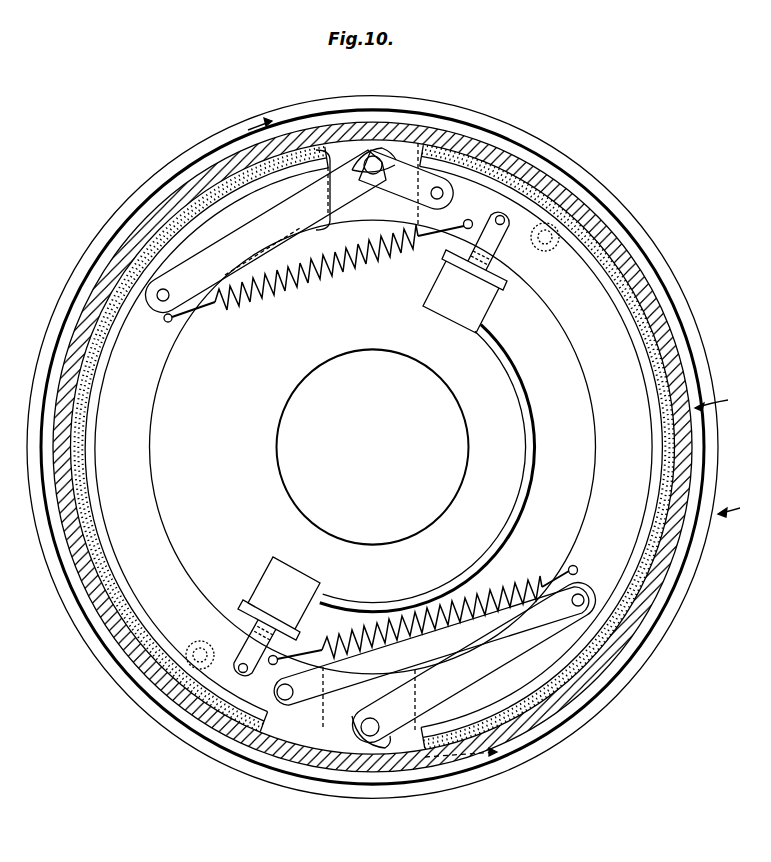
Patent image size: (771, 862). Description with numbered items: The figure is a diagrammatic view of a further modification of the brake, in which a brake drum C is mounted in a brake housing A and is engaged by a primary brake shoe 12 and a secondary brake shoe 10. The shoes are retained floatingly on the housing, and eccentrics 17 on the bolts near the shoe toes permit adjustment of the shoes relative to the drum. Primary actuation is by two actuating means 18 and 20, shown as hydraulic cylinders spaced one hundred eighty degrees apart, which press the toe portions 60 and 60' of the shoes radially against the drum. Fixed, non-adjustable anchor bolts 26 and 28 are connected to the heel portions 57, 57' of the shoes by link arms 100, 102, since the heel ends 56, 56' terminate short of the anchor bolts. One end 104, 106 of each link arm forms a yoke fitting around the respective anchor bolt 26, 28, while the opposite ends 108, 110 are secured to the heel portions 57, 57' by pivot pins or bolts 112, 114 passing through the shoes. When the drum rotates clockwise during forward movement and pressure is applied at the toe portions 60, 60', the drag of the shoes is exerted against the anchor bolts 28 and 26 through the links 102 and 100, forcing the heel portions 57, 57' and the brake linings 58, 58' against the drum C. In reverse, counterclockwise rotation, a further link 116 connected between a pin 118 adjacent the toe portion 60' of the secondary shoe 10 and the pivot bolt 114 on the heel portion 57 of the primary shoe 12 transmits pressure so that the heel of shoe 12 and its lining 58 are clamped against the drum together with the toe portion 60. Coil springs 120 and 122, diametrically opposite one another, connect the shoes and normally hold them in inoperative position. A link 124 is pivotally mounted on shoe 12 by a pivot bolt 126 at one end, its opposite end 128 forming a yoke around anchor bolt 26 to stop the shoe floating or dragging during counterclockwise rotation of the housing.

The secondary brake shoe 10 is at (143, 583).
The primary brake shoe 12 is at (630, 455).
The eccentrics 17 is at (551, 247).
The actuating means 18 is at (466, 272).
The actuating means 20 is at (277, 616).
The anchor bolt 26 is at (365, 170).
The anchor bolt 28 is at (368, 737).
The heel end 56 is at (386, 481).
The heel end 56' is at (318, 153).
The heel portion 57 is at (548, 465).
The heel portion 57' is at (200, 415).
The brake lining 58 is at (575, 446).
The brake lining 58' is at (176, 439).
The toe portion 60 is at (536, 413).
The toe portion 60' is at (211, 479).
The link arm 100 is at (270, 220).
The link arm 102 is at (470, 676).
The yoke end 104 is at (377, 185).
The yoke end 106 is at (382, 750).
The link arm end 108 is at (165, 322).
The link arm end 110 is at (562, 628).
The pivot pin 112 is at (170, 292).
The pivot bolt 114 is at (583, 596).
The link 116 is at (432, 624).
The pin 118 is at (267, 753).
The coil spring 120 is at (302, 294).
The coil spring 122 is at (526, 580).
The link 124 is at (430, 180).
The pivot bolt 126 is at (473, 223).
The yoke end 128 is at (369, 150).
The brake housing A is at (731, 499).
The brake drum C is at (718, 398).